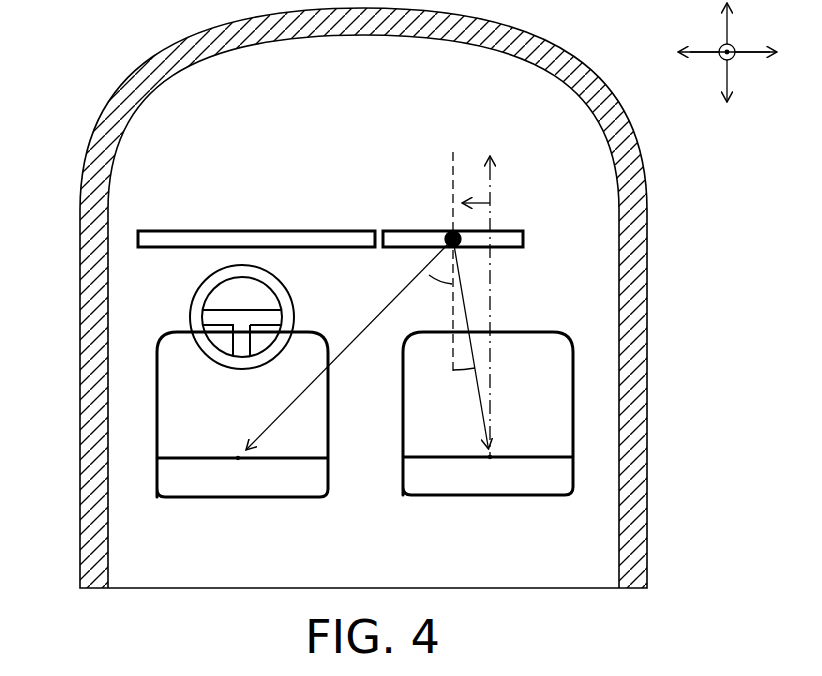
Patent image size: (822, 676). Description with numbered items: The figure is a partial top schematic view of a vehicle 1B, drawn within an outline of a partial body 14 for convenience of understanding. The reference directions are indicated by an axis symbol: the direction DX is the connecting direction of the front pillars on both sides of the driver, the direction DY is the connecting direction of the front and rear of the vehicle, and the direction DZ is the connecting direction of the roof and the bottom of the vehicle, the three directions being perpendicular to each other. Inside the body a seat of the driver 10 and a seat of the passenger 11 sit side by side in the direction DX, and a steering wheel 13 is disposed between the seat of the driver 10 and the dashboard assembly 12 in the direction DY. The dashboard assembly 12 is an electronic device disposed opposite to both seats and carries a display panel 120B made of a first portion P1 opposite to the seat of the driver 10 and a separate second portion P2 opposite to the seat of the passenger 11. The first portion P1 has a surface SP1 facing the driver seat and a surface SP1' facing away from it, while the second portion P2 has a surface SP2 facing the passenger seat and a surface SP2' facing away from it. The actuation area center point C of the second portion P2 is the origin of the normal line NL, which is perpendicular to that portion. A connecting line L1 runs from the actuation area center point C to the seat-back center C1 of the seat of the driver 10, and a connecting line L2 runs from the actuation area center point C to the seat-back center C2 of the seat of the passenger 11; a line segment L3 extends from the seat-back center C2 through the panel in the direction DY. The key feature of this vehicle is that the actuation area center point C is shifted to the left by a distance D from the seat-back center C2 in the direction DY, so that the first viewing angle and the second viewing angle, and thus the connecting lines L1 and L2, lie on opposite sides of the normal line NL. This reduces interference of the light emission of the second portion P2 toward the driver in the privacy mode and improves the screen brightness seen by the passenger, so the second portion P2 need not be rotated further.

The partial body 14 is at (88, 388).
The dashboard assembly 12 is at (330, 169).
The display panel 120B is at (427, 170).
The first portion P1 is at (270, 238).
The second portion P2 is at (410, 238).
The surface SP1 is at (87, 271).
The surface SP1' is at (87, 214).
The surface SP2 is at (608, 271).
The surface SP2' is at (612, 206).
The steering wheel 13 is at (188, 317).
The seat of the driver 10 is at (242, 469).
The seat of the passenger 11 is at (488, 469).
The actuation area center point C is at (457, 244).
The seat-back center C1 is at (237, 457).
The seat-back center C2 is at (491, 457).
The normal line NL is at (452, 245).
The connecting line L1 is at (349, 344).
The connecting line L2 is at (474, 418).
The line segment L3 is at (494, 288).
The distance D is at (476, 184).
The direction DX is at (752, 52).
The direction DY is at (727, 27).
The direction DZ is at (735, 59).
The vehicle 1B is at (734, 618).